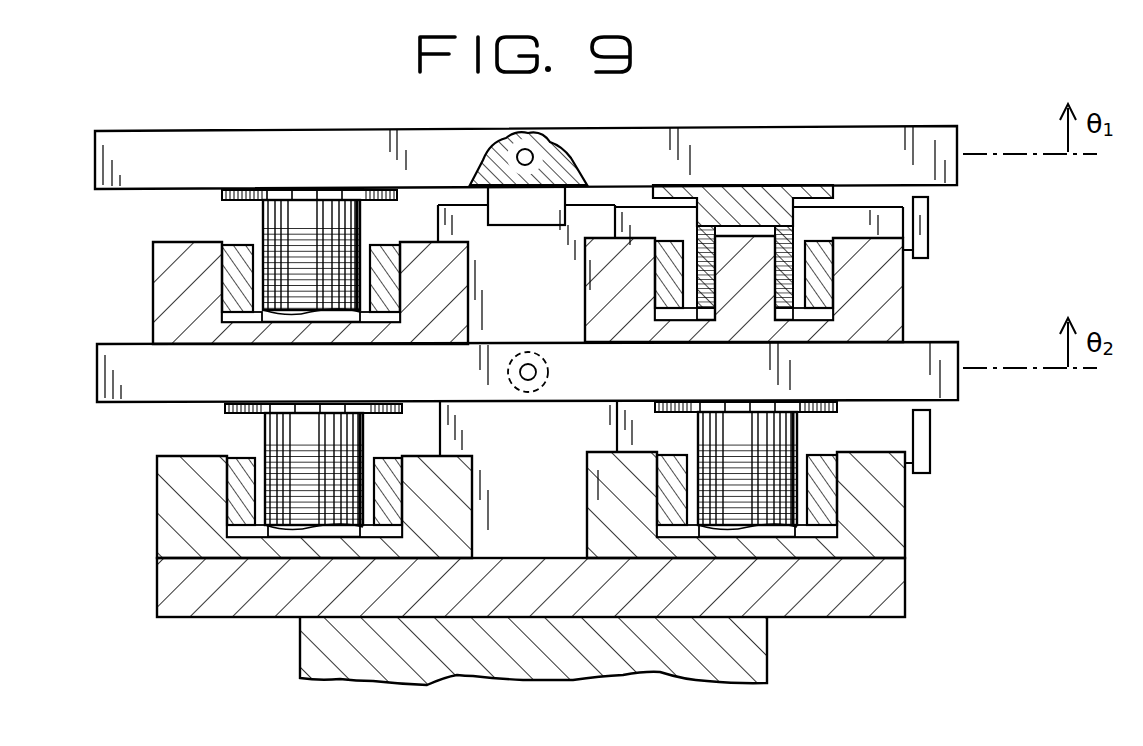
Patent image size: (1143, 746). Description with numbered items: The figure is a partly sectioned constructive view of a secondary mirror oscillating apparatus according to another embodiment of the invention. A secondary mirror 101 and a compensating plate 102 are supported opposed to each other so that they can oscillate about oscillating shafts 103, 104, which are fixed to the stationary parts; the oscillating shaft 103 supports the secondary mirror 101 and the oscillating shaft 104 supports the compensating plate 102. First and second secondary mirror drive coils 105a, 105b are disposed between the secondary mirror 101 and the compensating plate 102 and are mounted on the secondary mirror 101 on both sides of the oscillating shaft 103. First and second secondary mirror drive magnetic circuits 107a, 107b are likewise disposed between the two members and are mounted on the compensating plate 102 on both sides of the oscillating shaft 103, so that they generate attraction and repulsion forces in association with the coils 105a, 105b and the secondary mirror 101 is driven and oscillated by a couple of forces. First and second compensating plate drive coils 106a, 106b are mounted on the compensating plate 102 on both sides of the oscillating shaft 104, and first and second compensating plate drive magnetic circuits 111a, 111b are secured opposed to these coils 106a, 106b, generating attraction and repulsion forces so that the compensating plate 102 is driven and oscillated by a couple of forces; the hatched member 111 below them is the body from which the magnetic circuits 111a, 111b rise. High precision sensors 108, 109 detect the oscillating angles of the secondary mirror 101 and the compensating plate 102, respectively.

The secondary mirror 101 is at (863, 137).
The compensating plate 102 is at (960, 382).
The oscillating shaft 103 is at (517, 157).
The oscillating shaft 104 is at (536, 372).
The first secondary mirror drive linear motor coil 105a is at (271, 237).
The second secondary mirror drive linear motor coil 105b is at (793, 281).
The first compensating plate drive linear motor coil 106a is at (271, 455).
The second compensating plate drive linear motor coil 106b is at (797, 485).
The first secondary mirror drive linear motor magnetic circuit 107a is at (165, 289).
The second secondary mirror drive linear motor magnetic circuit 107b is at (893, 320).
The high precision sensor 108 is at (925, 228).
The high precision sensor 109 is at (931, 460).
The base 111 is at (505, 557).
The first compensating plate drive linear motor magnetic circuit 111a is at (170, 491).
The second compensating plate drive linear motor magnetic circuit 111b is at (893, 538).